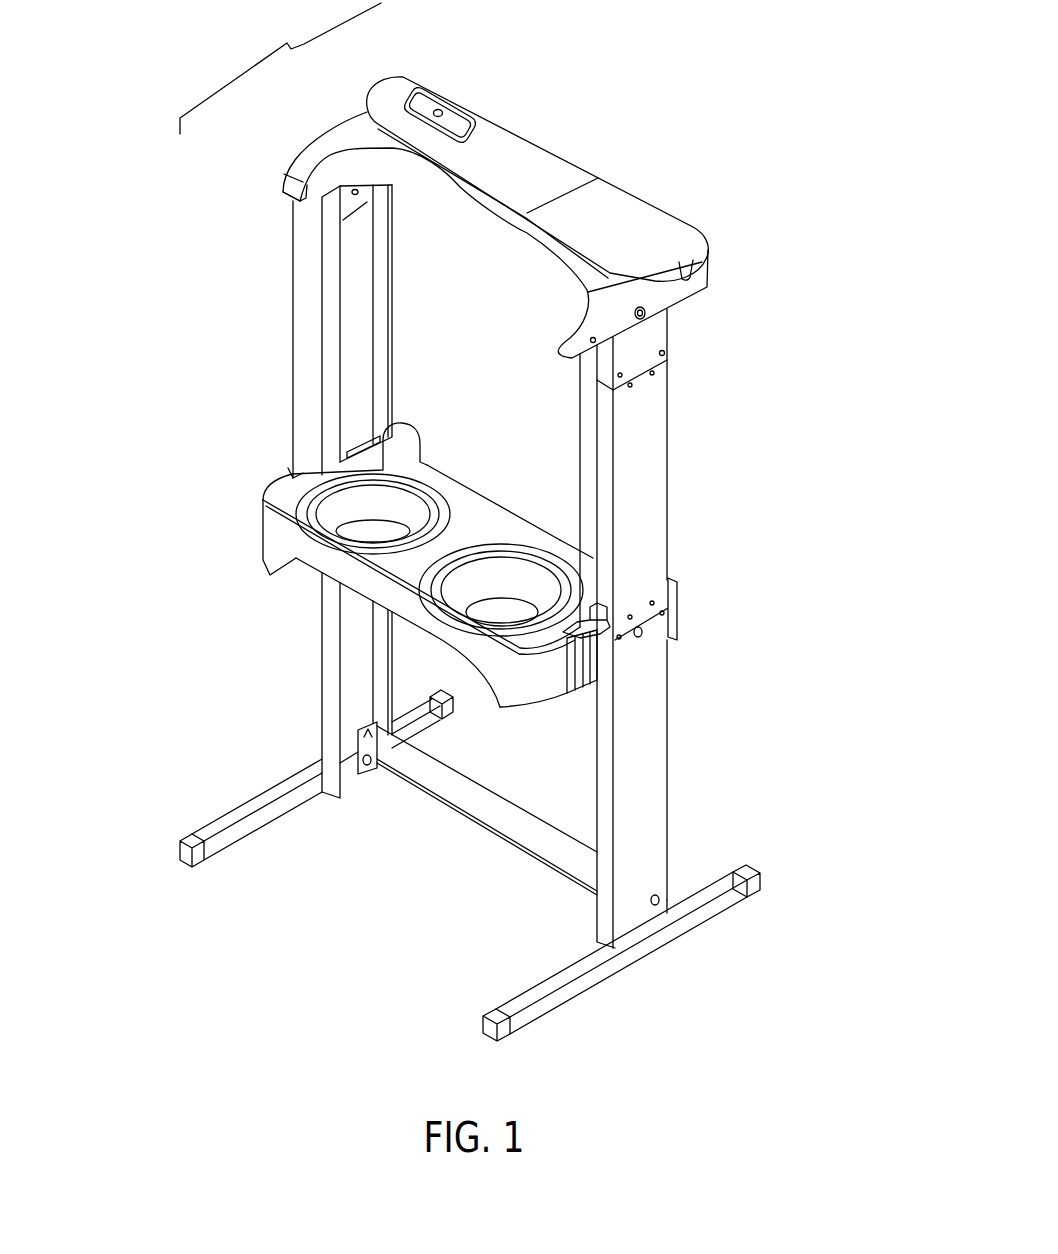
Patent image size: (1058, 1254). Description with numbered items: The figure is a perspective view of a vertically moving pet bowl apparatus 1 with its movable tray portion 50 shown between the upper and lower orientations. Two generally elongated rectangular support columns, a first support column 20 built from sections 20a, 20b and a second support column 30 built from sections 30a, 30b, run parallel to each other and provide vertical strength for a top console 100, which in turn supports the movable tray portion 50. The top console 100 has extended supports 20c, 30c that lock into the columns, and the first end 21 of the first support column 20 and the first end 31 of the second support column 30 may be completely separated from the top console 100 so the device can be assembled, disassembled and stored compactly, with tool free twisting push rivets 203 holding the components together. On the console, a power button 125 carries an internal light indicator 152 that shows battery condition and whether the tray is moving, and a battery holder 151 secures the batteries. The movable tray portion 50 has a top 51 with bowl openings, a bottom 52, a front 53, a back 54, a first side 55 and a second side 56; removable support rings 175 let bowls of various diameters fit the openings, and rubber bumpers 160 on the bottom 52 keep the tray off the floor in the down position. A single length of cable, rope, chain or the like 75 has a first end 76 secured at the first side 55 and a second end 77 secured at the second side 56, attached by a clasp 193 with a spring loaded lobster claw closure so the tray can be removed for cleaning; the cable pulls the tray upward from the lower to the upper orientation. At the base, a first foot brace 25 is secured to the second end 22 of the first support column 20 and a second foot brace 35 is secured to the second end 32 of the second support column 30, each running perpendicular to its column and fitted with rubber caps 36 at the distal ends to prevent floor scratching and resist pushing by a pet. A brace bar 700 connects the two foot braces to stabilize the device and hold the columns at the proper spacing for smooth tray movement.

The vertically moving pet bowl apparatus 1 is at (280, 68).
The top console 100 is at (340, 137).
The battery holder 151 is at (693, 232).
The power button 125 is at (467, 120).
The internal light indicator 152 is at (443, 110).
The first end of the first support column 21 is at (292, 197).
The first support column 20 is at (330, 663).
The first support column element 20a is at (352, 695).
The first support column element 20b is at (365, 293).
The extended support 20c is at (393, 190).
The cable, rope, chain or the like 75 is at (293, 336).
The first end of the cable 76 is at (292, 477).
The movable tray portion 50 is at (403, 447).
The first side of the movable tray portion 55 is at (267, 493).
The top of the movable tray portion 51 is at (482, 518).
The back of the movable tray portion 54 is at (593, 560).
The removable support ring 175 is at (573, 593).
The front of the movable tray portion 53 is at (270, 560).
The bottom of the movable tray portion 52 is at (400, 613).
The second side of the movable tray portion 56 is at (560, 697).
The bumper 160 is at (497, 707).
The second end of the cable 77 is at (600, 670).
The clasp 193 is at (605, 637).
The second support column 30 is at (653, 740).
The second support column element 30a is at (653, 775).
The second support column element 30b is at (655, 468).
The extended support 30c is at (660, 330).
The first end of the second support column 31 is at (650, 320).
The tool free twisting push rivet 203 is at (657, 327).
The second end of the second support column 32 is at (667, 903).
The second end of the first support column 22 is at (340, 763).
The first foot brace 25 is at (250, 823).
The brace bar 700 is at (503, 823).
The second foot brace 35 is at (555, 1000).
The cap 36 is at (183, 855).